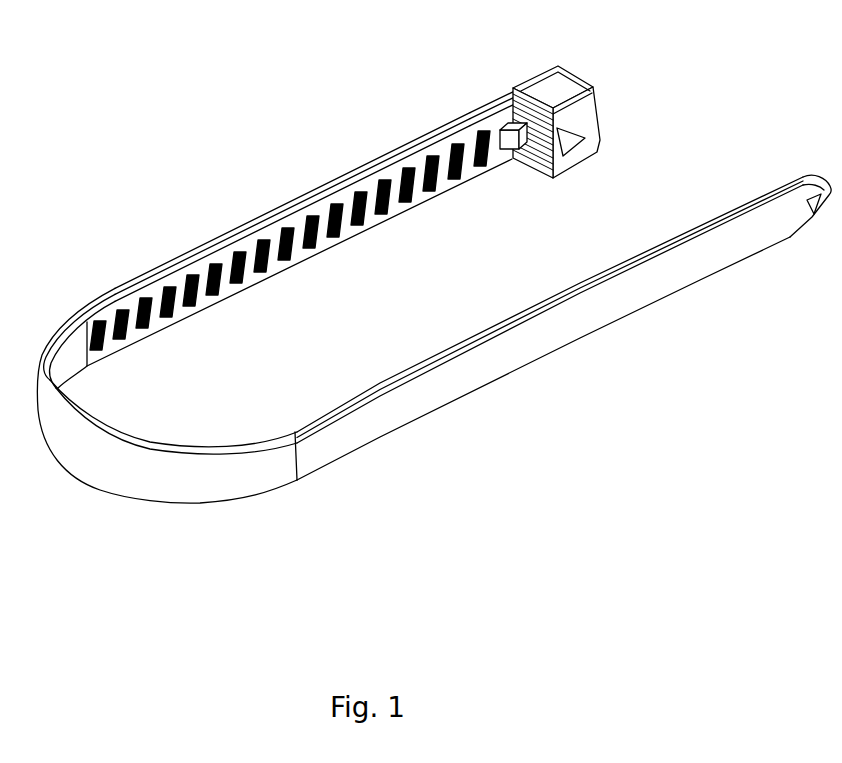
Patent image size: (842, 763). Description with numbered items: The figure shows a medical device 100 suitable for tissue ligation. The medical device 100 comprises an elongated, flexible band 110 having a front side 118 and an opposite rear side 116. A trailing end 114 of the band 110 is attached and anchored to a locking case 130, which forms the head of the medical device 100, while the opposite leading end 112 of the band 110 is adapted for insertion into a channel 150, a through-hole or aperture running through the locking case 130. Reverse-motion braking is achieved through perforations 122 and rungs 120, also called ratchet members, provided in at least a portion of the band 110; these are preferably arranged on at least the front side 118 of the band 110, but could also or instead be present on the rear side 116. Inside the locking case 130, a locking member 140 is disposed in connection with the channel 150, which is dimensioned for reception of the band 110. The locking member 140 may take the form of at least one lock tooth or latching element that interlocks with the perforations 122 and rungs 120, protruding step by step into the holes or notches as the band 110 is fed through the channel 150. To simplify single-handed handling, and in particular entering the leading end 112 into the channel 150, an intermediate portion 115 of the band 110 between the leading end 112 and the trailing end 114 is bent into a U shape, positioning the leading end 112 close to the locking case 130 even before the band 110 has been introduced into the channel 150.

The medical device 100 is at (284, 51).
The band 110 is at (172, 197).
The leading end 112 is at (800, 197).
The trailing end 114 is at (496, 114).
The intermediate portion 115 is at (100, 427).
The rear side 116 is at (523, 338).
The front side 118 is at (200, 287).
The rungs 120 is at (293, 237).
The perforations 122 is at (358, 200).
The locking case 130 is at (586, 110).
The locking member 140 is at (538, 132).
The channel 150 is at (541, 134).